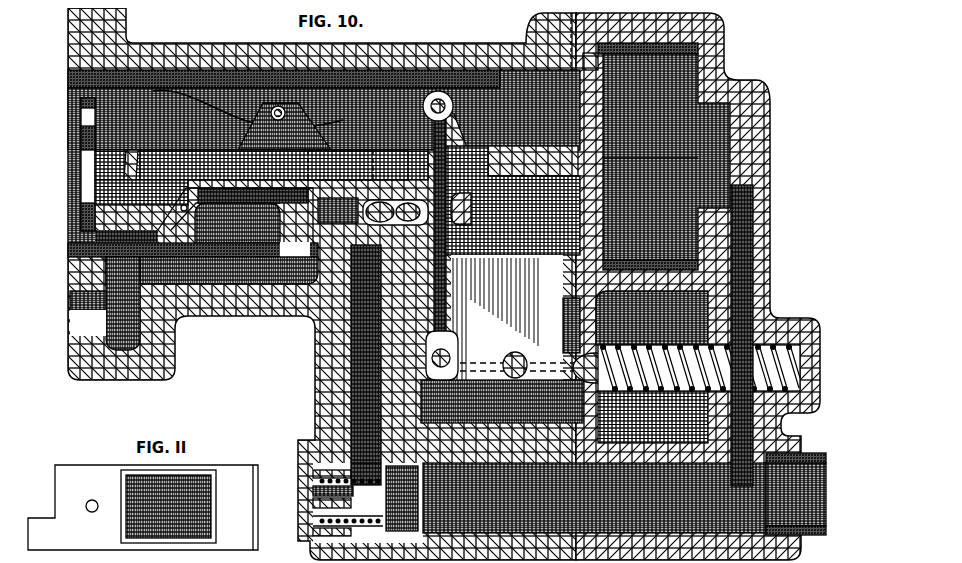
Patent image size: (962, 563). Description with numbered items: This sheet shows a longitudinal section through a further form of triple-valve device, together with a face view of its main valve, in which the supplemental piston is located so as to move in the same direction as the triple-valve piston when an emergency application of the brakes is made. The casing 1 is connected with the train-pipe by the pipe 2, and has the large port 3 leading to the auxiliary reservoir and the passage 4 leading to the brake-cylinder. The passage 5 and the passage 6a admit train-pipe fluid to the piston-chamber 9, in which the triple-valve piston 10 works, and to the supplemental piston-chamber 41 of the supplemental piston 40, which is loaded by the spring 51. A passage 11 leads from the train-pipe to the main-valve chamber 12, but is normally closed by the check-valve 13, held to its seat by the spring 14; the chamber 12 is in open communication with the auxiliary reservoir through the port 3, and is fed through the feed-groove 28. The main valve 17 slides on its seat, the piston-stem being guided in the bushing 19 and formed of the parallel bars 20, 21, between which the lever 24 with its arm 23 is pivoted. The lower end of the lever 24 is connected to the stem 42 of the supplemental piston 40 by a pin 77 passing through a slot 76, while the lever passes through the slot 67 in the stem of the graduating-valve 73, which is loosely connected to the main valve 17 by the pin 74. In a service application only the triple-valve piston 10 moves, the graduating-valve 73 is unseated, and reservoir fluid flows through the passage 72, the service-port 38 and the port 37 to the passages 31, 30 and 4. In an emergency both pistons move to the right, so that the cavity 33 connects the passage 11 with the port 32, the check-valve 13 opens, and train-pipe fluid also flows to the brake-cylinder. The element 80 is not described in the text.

In FIG. 10, the casing 1 is at (398, 40).
In FIG. 10, the branch pipe 2 is at (796, 494).
In FIG. 10, the opening 3 is at (72, 165).
In FIG. 10, the passage 4 is at (92, 313).
In FIG. 10, the passage 5 is at (594, 498).
In FIG. 10, the passage 6a is at (742, 335).
In FIG. 10, the piston-chamber 9 is at (666, 157).
In FIG. 10, the triple-valve piston 10 is at (598, 193).
In FIG. 10, the passage 11 is at (365, 365).
In FIG. 10, the main-valve chamber 12 is at (324, 110).
In FIG. 10, the check-valve 13 is at (386, 467).
In FIG. 10, the spring 14 is at (348, 513).
In FIG. 10, the main valve 17 is at (152, 211).
In FIG. 11, the main valve 17 is at (143, 507).
In FIG. 10, the bushing 19 is at (278, 63).
In FIG. 10, the bar 20 is at (120, 165).
In FIG. 10, the bar 21 is at (261, 165).
In FIG. 10, the arm 23 is at (424, 109).
In FIG. 10, the lever 24 is at (426, 157).
In FIG. 10, the feed-groove 28 is at (583, 45).
In FIG. 10, the passage 30 is at (123, 303).
In FIG. 10, the passage 31 is at (144, 270).
In FIG. 10, the port 32 is at (268, 241).
In FIG. 10, the cavity 33 is at (237, 223).
In FIG. 11, the cavity 33 is at (168, 506).
In FIG. 10, the port 37 is at (212, 270).
In FIG. 10, the service-port 38 is at (173, 198).
In FIG. 11, the service-port 38 is at (84, 504).
In FIG. 10, the supplemental piston 40 is at (600, 403).
In FIG. 10, the supplemental piston-chamber 41 is at (652, 362).
In FIG. 10, the stem 42 is at (538, 367).
In FIG. 10, the spring 51 is at (699, 377).
In FIG. 10, the slot 67 is at (447, 222).
In FIG. 10, the passage 72 is at (340, 165).
In FIG. 10, the graduating-valve 73 is at (338, 210).
In FIG. 10, the pin 74 is at (395, 212).
In FIG. 10, the slot 76 is at (502, 401).
In FIG. 10, the pin 77 is at (444, 343).
In FIG. 10, the cam lever 80 is at (284, 126).